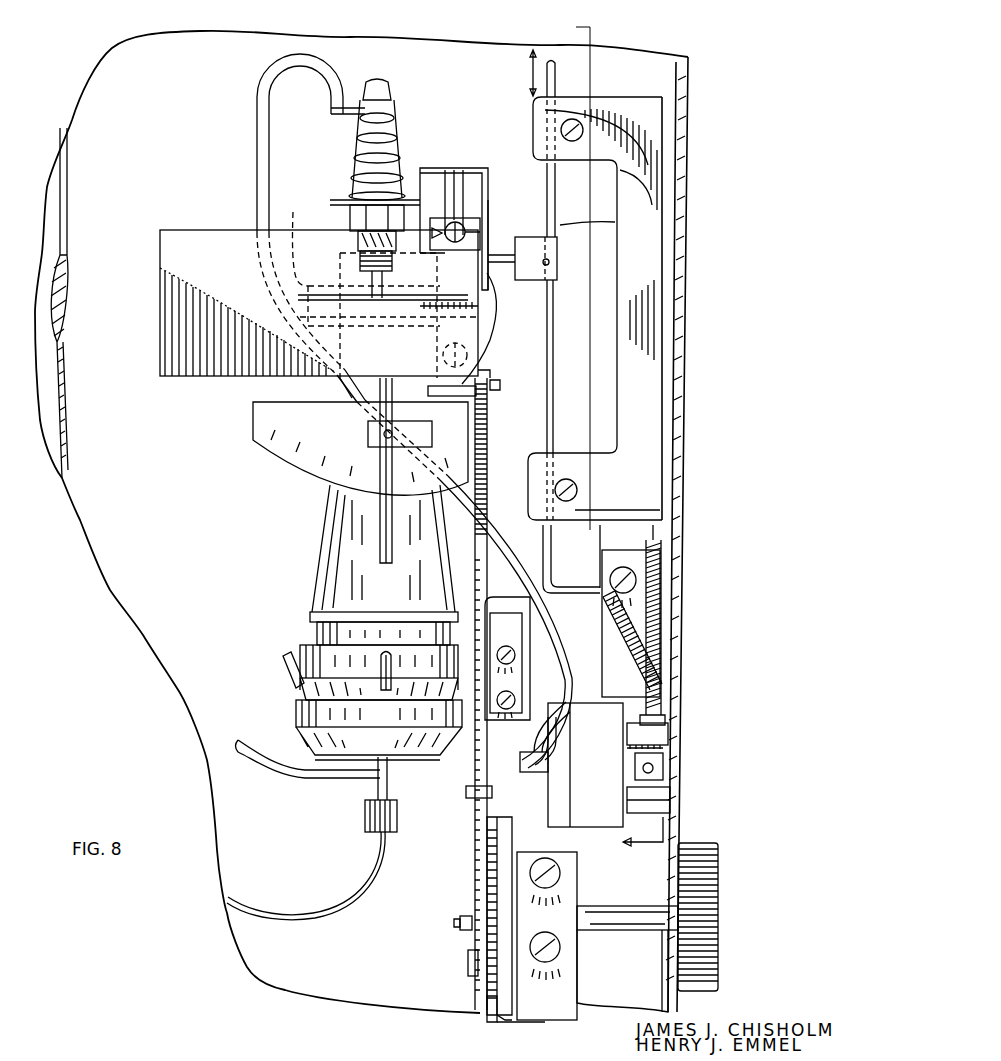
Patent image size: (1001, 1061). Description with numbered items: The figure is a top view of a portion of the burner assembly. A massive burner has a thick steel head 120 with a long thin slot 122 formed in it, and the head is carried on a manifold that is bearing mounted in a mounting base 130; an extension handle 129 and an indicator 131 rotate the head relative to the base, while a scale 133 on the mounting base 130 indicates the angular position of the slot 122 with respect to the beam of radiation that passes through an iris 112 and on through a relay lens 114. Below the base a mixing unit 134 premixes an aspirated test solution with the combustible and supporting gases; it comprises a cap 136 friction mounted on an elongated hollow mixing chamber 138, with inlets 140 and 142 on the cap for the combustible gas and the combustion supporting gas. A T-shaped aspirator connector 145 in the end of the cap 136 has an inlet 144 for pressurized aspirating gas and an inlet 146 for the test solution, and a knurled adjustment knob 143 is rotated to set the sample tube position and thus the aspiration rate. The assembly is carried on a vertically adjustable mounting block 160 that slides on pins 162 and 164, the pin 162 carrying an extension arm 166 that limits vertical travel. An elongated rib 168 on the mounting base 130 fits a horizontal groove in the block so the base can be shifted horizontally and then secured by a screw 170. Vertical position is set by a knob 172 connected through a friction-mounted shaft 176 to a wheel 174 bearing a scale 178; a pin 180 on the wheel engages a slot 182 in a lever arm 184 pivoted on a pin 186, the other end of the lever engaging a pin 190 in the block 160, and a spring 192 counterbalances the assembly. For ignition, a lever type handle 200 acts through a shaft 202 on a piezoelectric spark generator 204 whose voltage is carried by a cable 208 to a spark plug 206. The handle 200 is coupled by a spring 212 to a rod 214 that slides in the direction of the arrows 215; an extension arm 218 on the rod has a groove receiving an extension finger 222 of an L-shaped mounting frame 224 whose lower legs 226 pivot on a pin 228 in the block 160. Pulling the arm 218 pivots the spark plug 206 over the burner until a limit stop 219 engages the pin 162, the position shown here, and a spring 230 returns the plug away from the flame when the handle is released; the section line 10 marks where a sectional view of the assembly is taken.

The section line 10 is at (573, 26).
The iris 112 is at (684, 322).
The relay lens 114 is at (70, 283).
The thick steel head 120 is at (180, 230).
The long thin slot 122 is at (298, 294).
The extension handle 129 is at (380, 526).
The mounting base 130 is at (342, 393).
The indicator 131 is at (368, 438).
The scale 133 is at (253, 425).
The mixing unit 134 is at (316, 604).
The cap 136 is at (292, 727).
The elongated hollow mixing chamber 138 is at (326, 575).
The inlet 140 is at (386, 650).
The inlet 142 is at (286, 665).
The knurled adjustment knob 143 is at (396, 817).
The inlet 144 is at (296, 778).
The T-shaped aspirator connector 145 is at (374, 780).
The inlet 146 is at (364, 890).
The mounting block 160 is at (478, 266).
The pin 162 is at (456, 243).
The pin 164 is at (442, 355).
The extension arm 166 is at (438, 232).
The elongated rib 168 is at (440, 395).
The screw 170 is at (375, 284).
The knob 172 is at (720, 956).
The wheel 174 is at (487, 1002).
The shaft 176 is at (646, 940).
The scale 178 is at (495, 1026).
The pin 180 is at (454, 925).
The slot 182 is at (468, 964).
The lever arm 184 is at (472, 891).
The pin 186 is at (477, 617).
The pin 190 is at (500, 387).
The spring 192 is at (468, 774).
The lever type handle 200 is at (665, 764).
The shaft 202 is at (666, 780).
The piezoelectric spark generator 204 is at (556, 826).
The spark plug 206 is at (360, 170).
The cable 208 is at (257, 165).
The spring 212 is at (617, 636).
The rod 214 is at (560, 418).
The arrows 215 is at (531, 70).
The extension arm 218 is at (614, 222).
The limit stop 219 is at (454, 185).
The extension finger 222 is at (512, 248).
The L-shaped mounting frame 224 is at (484, 168).
The lower legs 226 is at (494, 200).
The pin 228 is at (494, 320).
The spring 230 is at (663, 603).